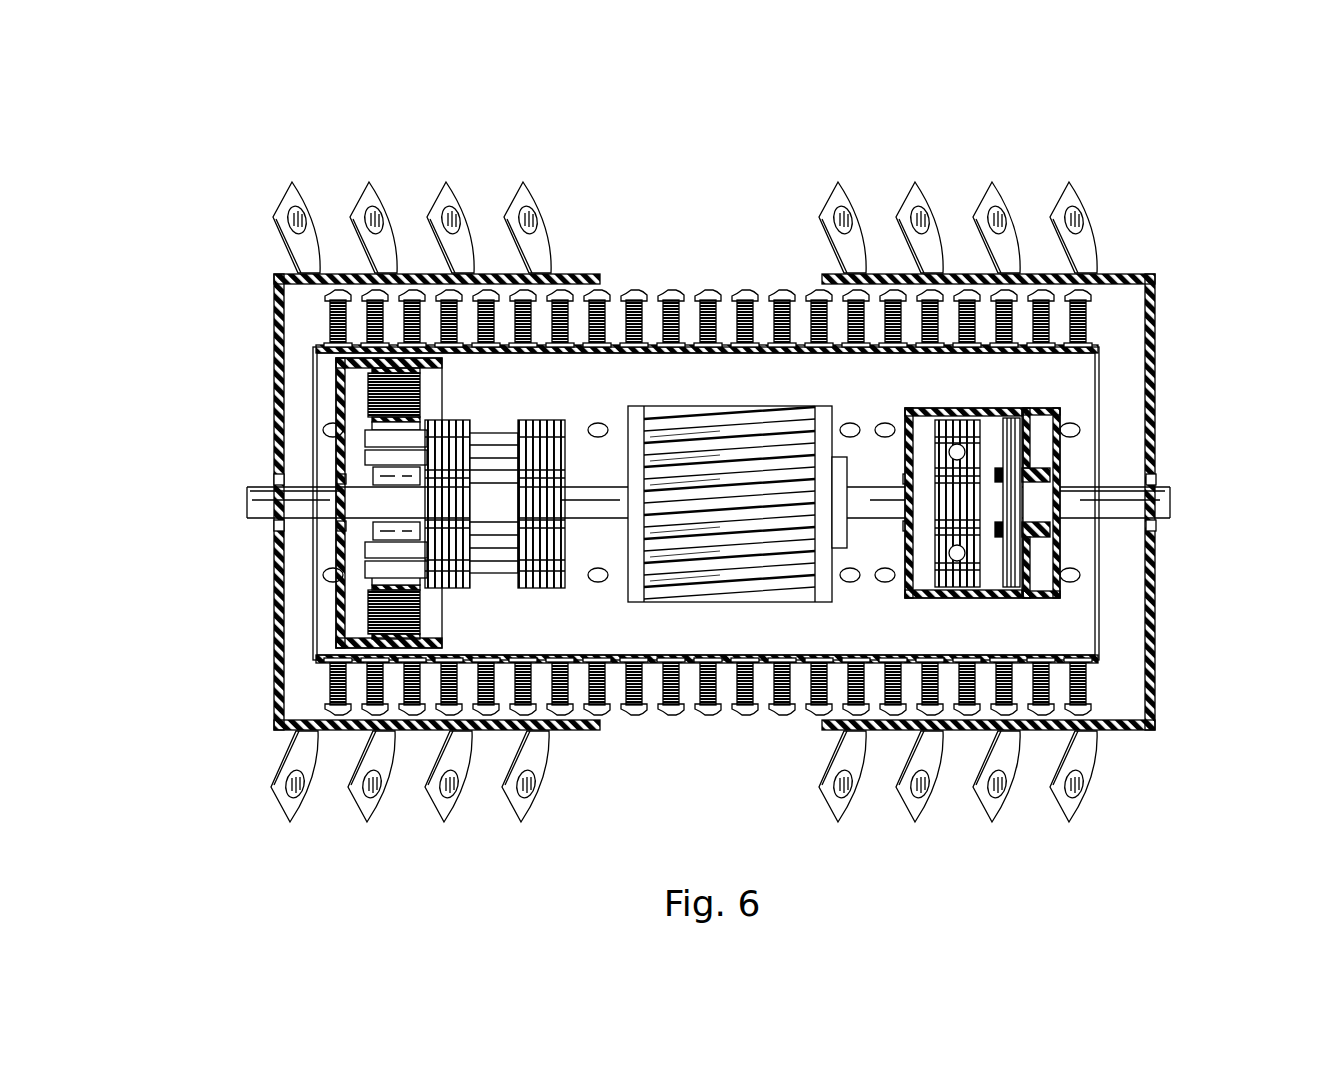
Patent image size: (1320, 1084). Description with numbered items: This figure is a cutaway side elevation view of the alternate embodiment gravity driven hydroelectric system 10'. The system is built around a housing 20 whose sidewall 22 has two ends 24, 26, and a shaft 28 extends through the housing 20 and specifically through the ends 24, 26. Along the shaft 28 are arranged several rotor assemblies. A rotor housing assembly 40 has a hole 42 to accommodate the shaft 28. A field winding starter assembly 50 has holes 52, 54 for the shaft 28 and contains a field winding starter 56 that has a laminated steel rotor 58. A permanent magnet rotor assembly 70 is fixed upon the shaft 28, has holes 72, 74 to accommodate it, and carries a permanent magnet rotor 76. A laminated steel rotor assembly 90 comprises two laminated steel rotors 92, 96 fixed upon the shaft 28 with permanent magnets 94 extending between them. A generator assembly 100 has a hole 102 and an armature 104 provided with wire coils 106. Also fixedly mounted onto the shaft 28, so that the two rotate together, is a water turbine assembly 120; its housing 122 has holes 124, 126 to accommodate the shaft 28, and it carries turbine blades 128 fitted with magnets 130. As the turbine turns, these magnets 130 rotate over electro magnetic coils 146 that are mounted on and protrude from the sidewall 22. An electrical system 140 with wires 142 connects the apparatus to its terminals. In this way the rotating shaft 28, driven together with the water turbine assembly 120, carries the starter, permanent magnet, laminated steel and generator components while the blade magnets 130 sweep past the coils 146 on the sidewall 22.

The gravity driven hydroelectric system 10' is at (699, 487).
The housing 20 is at (300, 627).
The sidewall 22 is at (1098, 628).
The end 24 is at (313, 590).
The end 26 is at (1156, 612).
The shaft 28 is at (253, 505).
The rotor housing assembly 40 is at (1130, 500).
The hole 42 is at (1030, 517).
The field winding starter assembly 50 is at (903, 470).
The hole 52 is at (1053, 480).
The hole 54 is at (897, 518).
The field winding starter 56 is at (945, 590).
The laminated steel rotor 58 is at (1010, 590).
The permanent magnet rotor assembly 70 is at (748, 485).
The hole 72 is at (868, 480).
The hole 74 is at (612, 487).
The permanent magnet rotor 76 is at (693, 603).
The laminated steel rotor assembly 90 is at (526, 343).
The laminated steel rotor 92 is at (549, 404).
The permanent magnets 94 is at (508, 437).
The laminated steel rotor 96 is at (453, 423).
The generator assembly 100 is at (406, 342).
The hole 102 is at (340, 483).
The armature 104 is at (375, 470).
The wire coils 106 is at (380, 385).
The water turbine assembly 120 is at (1127, 272).
The housing 122 is at (1033, 272).
The hole 124 is at (1152, 525).
The hole 126 is at (276, 524).
The turbine blades 128 is at (295, 193).
The magnets 130 is at (377, 207).
The electrical system 140 is at (708, 457).
The wires 142 is at (708, 457).
The electro magnetic coils 146 is at (763, 298).